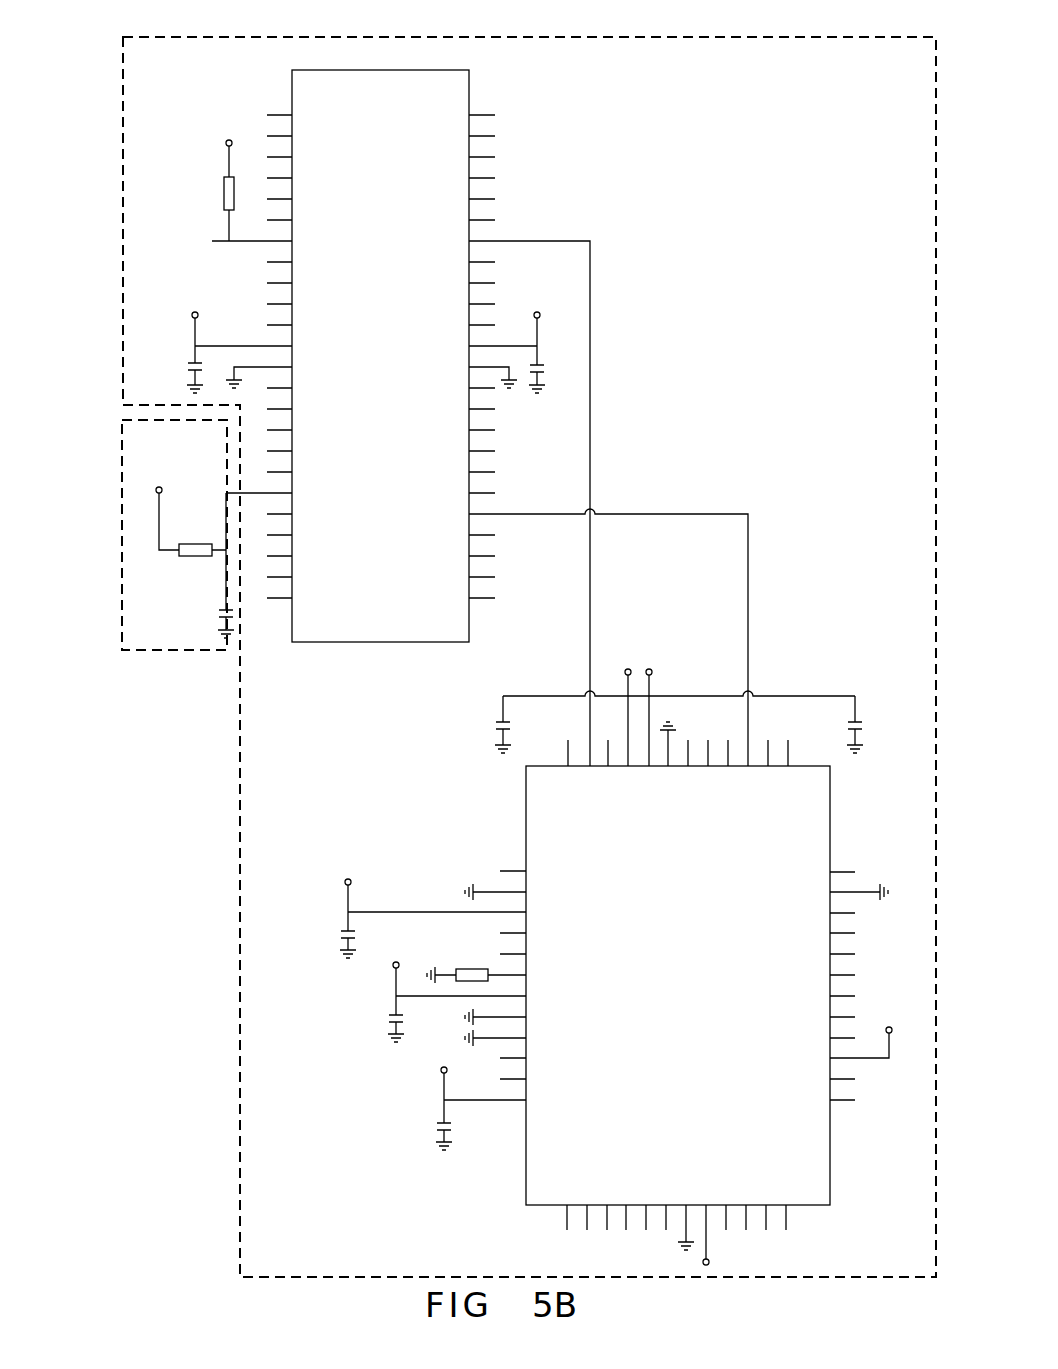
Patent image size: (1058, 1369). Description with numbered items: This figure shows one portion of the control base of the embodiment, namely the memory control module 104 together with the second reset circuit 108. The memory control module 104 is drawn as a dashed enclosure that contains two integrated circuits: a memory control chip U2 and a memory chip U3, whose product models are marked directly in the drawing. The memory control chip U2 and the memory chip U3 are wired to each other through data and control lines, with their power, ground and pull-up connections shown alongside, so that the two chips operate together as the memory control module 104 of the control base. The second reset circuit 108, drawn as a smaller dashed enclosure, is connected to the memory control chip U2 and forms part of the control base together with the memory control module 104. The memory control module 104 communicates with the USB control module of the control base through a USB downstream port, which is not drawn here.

The memory control module 104 is at (529, 638).
The second reset circuit 108 is at (154, 491).
The memory control chip U2 is at (469, 87).
The memory chip U3 is at (526, 812).